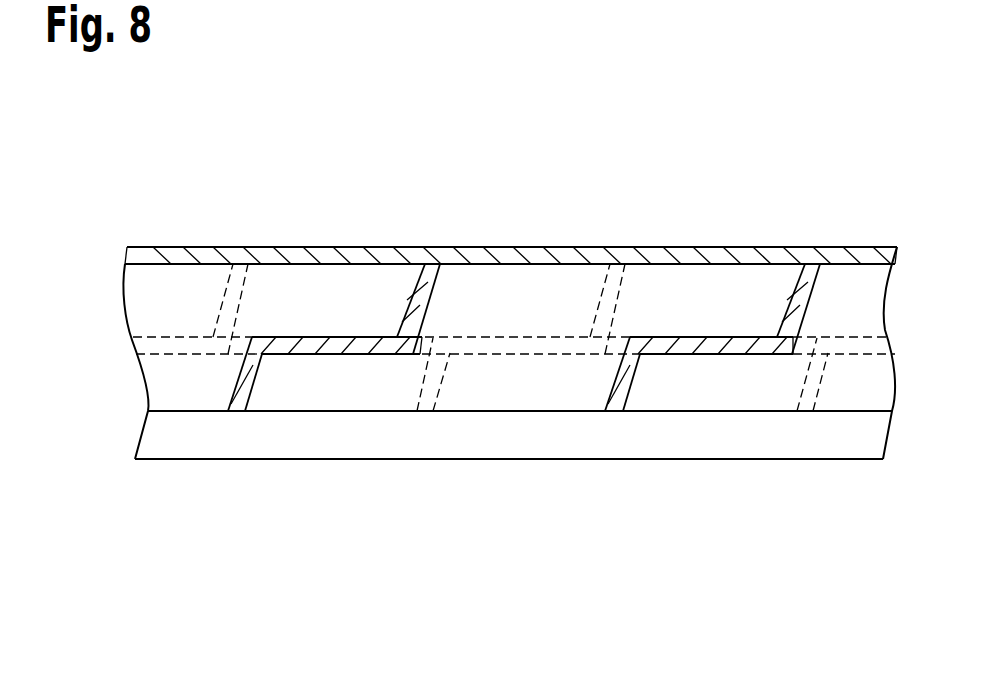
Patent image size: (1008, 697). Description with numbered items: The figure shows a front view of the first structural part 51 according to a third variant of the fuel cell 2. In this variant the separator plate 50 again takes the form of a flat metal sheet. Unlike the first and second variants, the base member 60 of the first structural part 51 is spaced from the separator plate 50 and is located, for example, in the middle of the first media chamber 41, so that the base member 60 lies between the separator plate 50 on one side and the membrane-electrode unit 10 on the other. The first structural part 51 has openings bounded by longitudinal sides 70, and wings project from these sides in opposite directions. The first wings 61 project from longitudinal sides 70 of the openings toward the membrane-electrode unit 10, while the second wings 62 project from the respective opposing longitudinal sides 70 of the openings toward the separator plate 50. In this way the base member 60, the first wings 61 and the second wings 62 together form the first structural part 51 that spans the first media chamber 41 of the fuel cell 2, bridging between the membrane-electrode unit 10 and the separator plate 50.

The fuel cell 2 is at (117, 159).
The membrane-electrode unit 10 is at (167, 430).
The first media chamber 41 is at (118, 379).
The separator plate 50 is at (127, 256).
The first structural part 51 is at (118, 343).
The base member 60 is at (320, 336).
The first wings 61 is at (240, 379).
The second wings 62 is at (423, 290).
The longitudinal sides 70 is at (252, 337).